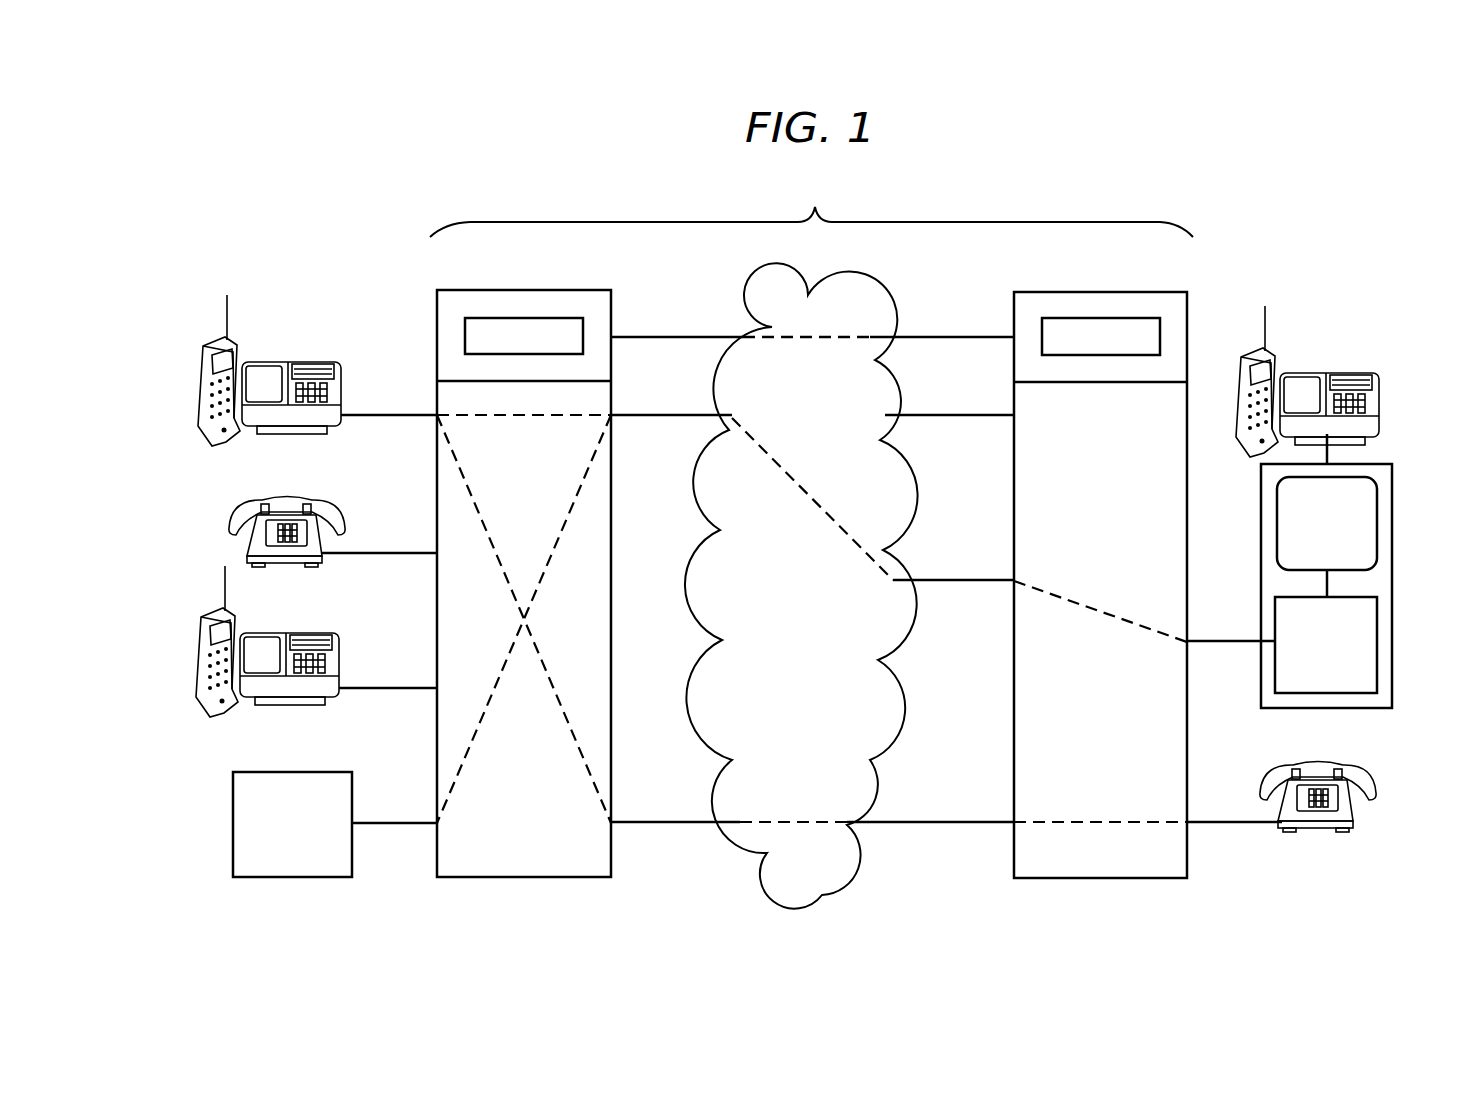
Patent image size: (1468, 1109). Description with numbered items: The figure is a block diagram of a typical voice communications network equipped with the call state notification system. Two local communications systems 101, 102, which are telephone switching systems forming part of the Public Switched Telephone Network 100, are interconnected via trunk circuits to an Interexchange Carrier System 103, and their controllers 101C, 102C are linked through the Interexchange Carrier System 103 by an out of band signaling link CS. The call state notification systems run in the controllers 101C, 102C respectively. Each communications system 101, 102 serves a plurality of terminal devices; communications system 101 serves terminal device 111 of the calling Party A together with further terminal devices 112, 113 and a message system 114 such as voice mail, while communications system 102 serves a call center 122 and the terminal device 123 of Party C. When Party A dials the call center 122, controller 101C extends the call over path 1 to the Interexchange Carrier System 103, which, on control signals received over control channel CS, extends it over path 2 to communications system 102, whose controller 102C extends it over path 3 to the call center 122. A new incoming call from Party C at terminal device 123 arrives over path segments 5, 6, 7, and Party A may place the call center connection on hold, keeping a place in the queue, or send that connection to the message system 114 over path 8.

The Public Switched Telephone Network 100 is at (811, 206).
The communications system 101 is at (580, 877).
The controller 101C is at (495, 290).
The communications system 102 is at (1137, 878).
The controller 102C is at (1068, 292).
The Interexchange Carrier System 103 is at (872, 280).
The out of band signaling link CS is at (618, 337).
The path 1 is at (515, 415).
The path 2 is at (800, 488).
The path 3 is at (1085, 608).
The path segment 5 is at (1080, 822).
The path segment 6 is at (793, 820).
The path segment 7 is at (478, 503).
The path 8 is at (500, 663).
The terminal device 111 is at (198, 379).
The desk telephone 112 is at (228, 514).
The cordless telephone with base unit 113 is at (196, 655).
The message system 114 is at (233, 793).
The call center 122 is at (1392, 653).
The terminal device 123 is at (1375, 791).